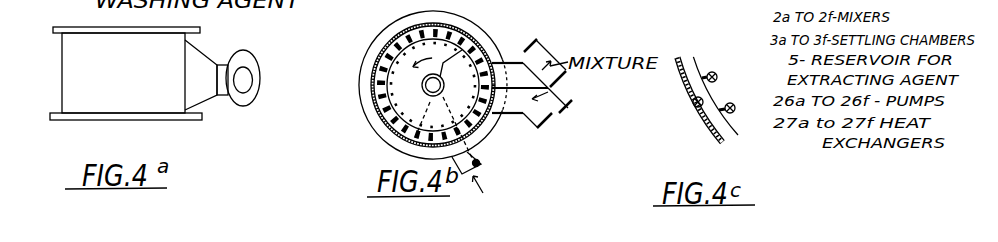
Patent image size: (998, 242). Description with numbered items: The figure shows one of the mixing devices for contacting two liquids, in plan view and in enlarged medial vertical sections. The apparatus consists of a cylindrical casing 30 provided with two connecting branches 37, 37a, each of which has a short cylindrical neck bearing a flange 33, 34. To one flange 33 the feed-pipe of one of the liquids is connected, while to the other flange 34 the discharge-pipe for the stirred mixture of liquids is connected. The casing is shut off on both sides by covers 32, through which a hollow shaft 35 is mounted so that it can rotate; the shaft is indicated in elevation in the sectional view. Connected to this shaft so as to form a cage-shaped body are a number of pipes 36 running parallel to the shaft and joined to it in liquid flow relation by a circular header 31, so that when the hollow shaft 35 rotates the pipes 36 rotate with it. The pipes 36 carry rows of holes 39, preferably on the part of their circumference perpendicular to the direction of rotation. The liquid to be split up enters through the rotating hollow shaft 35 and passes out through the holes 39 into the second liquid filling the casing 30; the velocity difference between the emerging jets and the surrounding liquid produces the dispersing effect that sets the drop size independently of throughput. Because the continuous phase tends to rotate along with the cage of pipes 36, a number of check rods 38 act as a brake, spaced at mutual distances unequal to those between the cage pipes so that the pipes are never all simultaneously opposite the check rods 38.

In FIG. 4a, the cylindrical casing 30 is at (62, 62).
In FIG. 4b, the cylindrical casing 30 is at (375, 106).
In FIG. 4c, the cylindrical casing 30 is at (683, 78).
In FIG. 4b, the circular header 31 is at (385, 50).
In FIG. 4c, the circular header 31 is at (733, 127).
In FIG. 4a, the covers 32 is at (197, 34).
In FIG. 4b, the covers 32 is at (364, 118).
In FIG. 4b, the flange 33 is at (538, 130).
In FIG. 4a, the flange 34 is at (252, 62).
In FIG. 4b, the flange 34 is at (530, 42).
In FIG. 4b, the hollow shaft 35 is at (439, 82).
In FIG. 4b, the pipes 36 is at (400, 125).
In FIG. 4c, the pipes 36 is at (719, 68).
In FIG. 4a, the connecting branch 37 is at (205, 63).
In FIG. 4b, the connecting branch 37 is at (508, 62).
In FIG. 4b, the connecting branch 37a is at (530, 115).
In FIG. 4b, the check rods 38 is at (379, 70).
In FIG. 4c, the check rods 38 is at (699, 114).
In FIG. 4c, the holes 39 is at (706, 80).